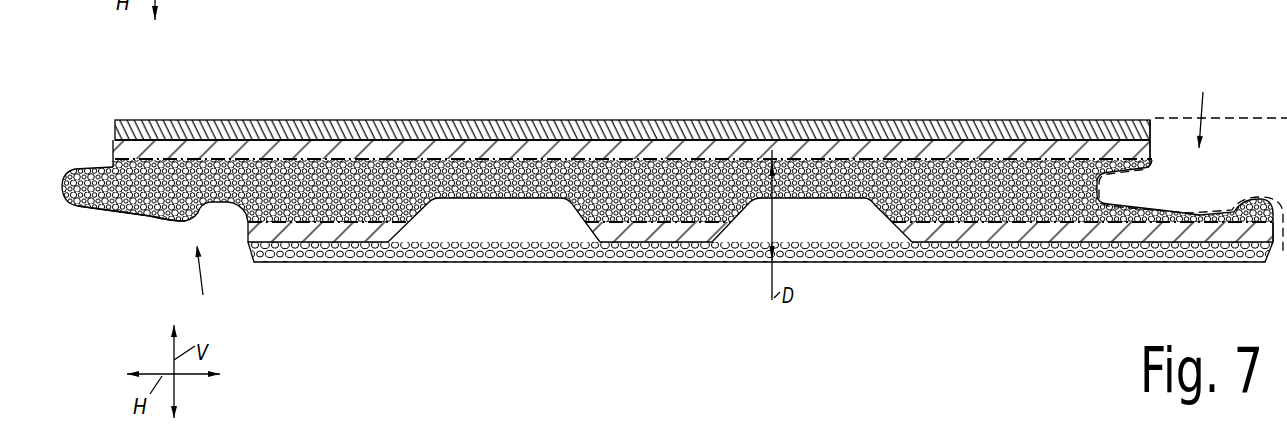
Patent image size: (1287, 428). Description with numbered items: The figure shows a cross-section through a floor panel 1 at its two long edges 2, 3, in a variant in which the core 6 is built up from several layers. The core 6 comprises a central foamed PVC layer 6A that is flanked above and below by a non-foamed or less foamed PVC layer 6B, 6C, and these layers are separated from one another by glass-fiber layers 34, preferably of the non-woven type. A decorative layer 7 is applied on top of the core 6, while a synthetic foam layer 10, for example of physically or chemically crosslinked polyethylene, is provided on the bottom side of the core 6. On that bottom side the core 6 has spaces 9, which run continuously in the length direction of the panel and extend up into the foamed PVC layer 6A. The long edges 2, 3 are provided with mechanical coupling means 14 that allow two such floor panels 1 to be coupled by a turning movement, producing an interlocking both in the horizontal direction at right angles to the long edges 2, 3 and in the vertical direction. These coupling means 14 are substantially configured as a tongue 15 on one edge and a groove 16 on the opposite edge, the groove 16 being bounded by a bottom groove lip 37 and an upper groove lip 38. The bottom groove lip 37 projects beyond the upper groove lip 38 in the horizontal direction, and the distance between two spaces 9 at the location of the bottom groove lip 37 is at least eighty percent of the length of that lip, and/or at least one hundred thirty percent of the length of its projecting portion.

The floor panel 1 is at (697, 118).
The long edge 2 is at (1192, 178).
The long edge 3 is at (117, 240).
The core 6 is at (672, 203).
The central foamed PVC layer 6A is at (267, 187).
The non-foamed or less foamed PVC layer 6B is at (343, 147).
The non-foamed or less foamed PVC layer 6C is at (327, 237).
The decorative layer 7 is at (103, 137).
The spaces 9 is at (500, 217).
The synthetic foam layer 10 is at (895, 252).
The mechanical coupling means 14 is at (703, 191).
The tongue 15 is at (133, 192).
The groove 16 is at (1078, 192).
The glass-fiber layers 34 is at (390, 158).
The bottom groove lip 37 is at (1158, 226).
The upper groove lip 38 is at (1107, 148).